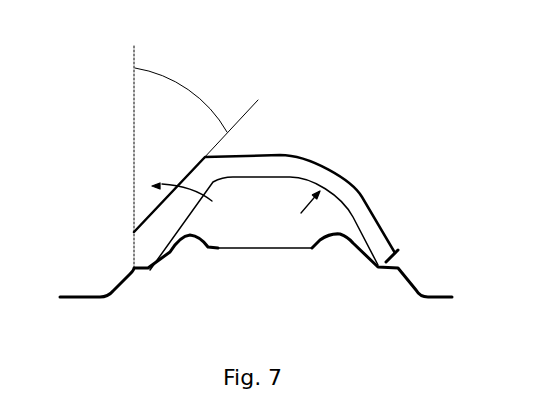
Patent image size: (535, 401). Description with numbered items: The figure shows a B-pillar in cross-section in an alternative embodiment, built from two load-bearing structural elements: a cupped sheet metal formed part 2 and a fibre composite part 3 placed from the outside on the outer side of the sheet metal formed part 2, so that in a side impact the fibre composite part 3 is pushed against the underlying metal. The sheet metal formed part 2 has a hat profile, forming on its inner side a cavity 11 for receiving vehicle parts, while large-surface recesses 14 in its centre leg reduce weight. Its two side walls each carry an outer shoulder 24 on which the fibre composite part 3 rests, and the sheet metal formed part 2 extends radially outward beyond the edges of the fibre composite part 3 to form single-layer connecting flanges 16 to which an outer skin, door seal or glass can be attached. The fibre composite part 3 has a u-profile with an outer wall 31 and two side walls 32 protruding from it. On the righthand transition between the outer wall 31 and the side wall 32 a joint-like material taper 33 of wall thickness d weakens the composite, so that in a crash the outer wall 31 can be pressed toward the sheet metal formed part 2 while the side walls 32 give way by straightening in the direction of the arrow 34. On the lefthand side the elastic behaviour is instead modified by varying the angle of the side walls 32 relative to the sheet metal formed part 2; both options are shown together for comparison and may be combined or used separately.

The sheet metal formed part 2 is at (402, 296).
The fibre composite part 3 is at (278, 150).
The cavity 11 is at (234, 283).
The large-surface recesses 14 is at (272, 249).
The connecting flange 16 is at (80, 295).
The outer shoulder 24 is at (143, 272).
The outer wall 31 is at (246, 158).
The side walls 32 is at (155, 212).
The material taper 33 is at (327, 178).
The arrow 34 is at (178, 183).
The wall thickness d is at (337, 167).